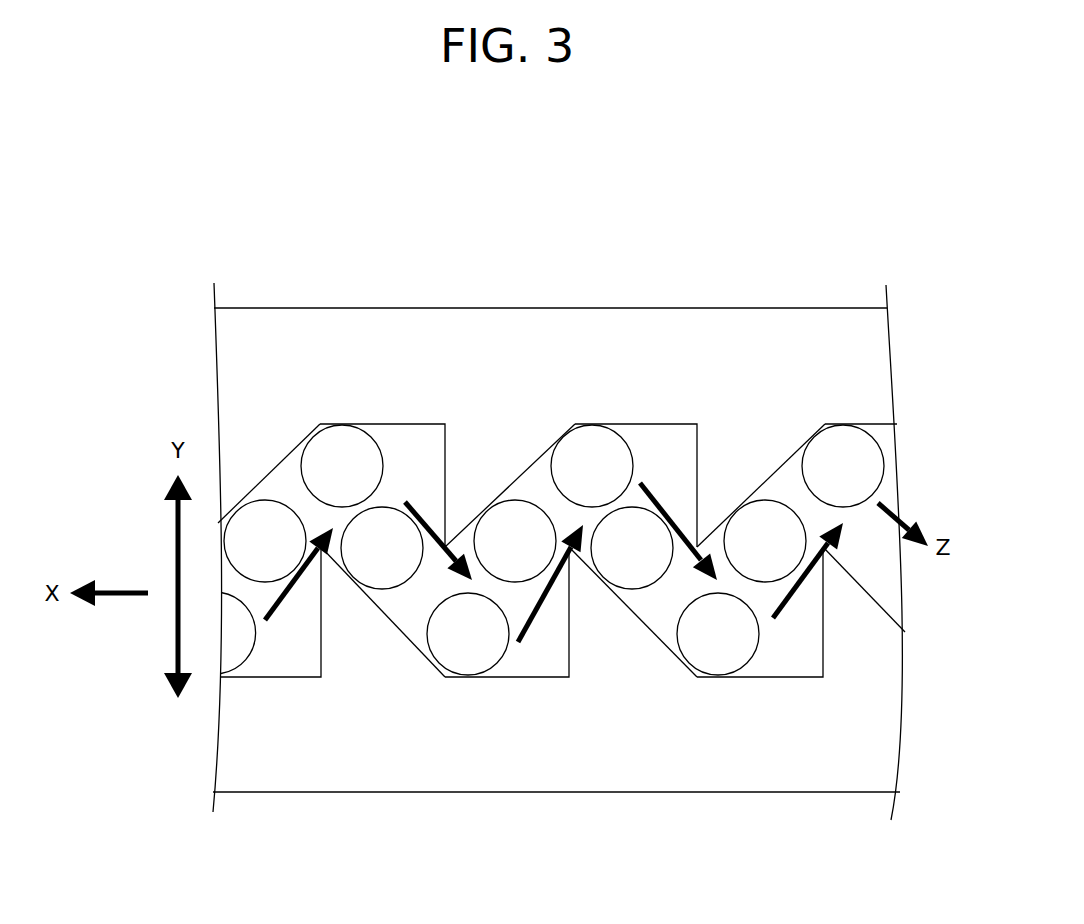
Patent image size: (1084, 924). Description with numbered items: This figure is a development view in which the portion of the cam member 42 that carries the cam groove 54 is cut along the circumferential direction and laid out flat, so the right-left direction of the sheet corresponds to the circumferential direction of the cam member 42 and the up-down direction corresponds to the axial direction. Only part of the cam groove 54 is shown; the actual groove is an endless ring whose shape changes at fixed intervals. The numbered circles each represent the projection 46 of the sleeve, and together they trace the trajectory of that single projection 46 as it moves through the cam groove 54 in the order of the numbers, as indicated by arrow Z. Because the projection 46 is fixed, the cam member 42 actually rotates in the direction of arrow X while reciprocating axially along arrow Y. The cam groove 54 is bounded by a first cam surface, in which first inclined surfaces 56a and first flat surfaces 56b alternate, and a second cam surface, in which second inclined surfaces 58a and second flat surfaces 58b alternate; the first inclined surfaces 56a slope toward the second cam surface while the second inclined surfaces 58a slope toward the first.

The cam member 42 is at (413, 325).
The projection 46 is at (317, 457).
The cam groove 54 is at (915, 481).
The first inclined surface 56a is at (513, 483).
The first flat surface 56b is at (445, 443).
The second inclined surface 58a is at (658, 628).
The second flat surface 58b is at (548, 675).